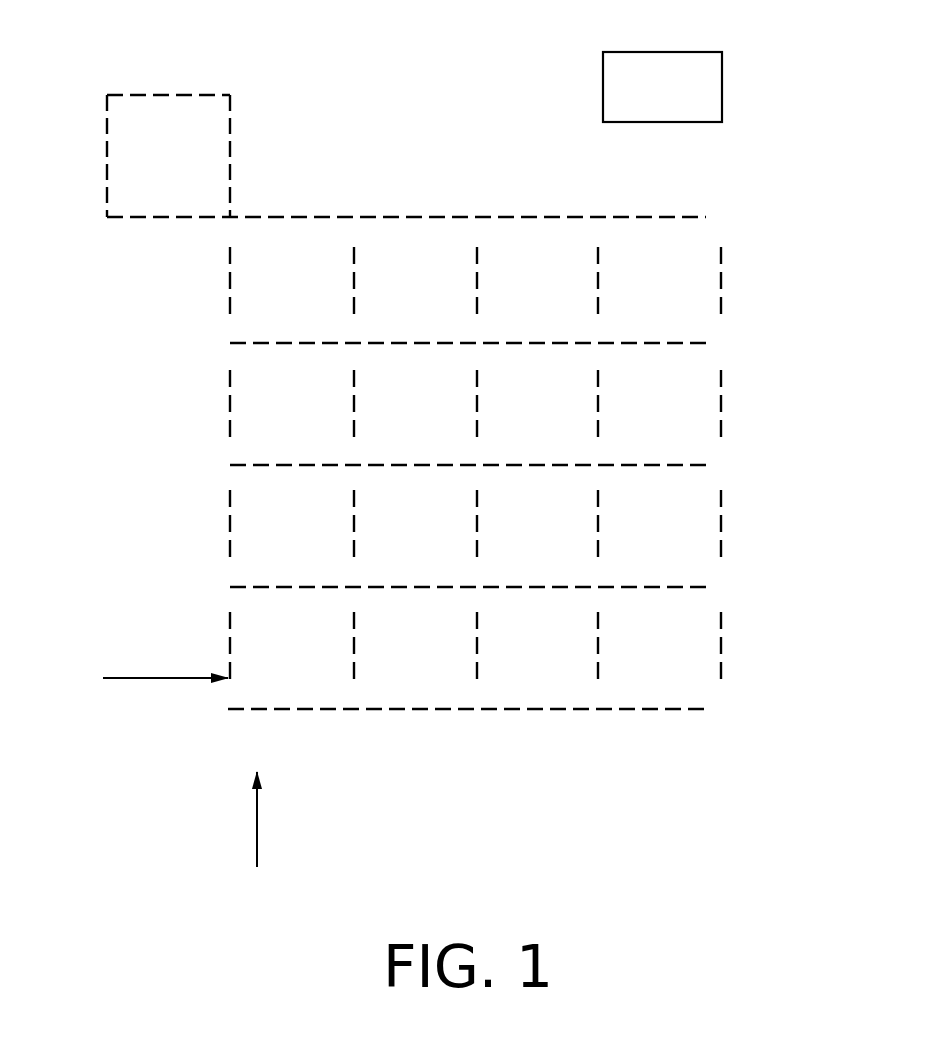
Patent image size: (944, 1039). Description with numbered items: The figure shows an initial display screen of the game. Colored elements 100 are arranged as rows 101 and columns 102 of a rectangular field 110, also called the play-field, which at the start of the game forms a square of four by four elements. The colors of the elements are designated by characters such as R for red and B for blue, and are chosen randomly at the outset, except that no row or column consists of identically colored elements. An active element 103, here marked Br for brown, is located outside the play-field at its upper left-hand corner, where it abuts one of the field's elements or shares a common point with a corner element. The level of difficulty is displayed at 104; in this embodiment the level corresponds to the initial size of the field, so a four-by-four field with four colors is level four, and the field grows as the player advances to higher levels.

The elements 100 is at (655, 256).
The rows 101 is at (165, 654).
The columns 102 is at (651, 713).
The active element 103 is at (232, 93).
The level display 104 is at (612, 128).
The rectangular field 110 is at (299, 835).